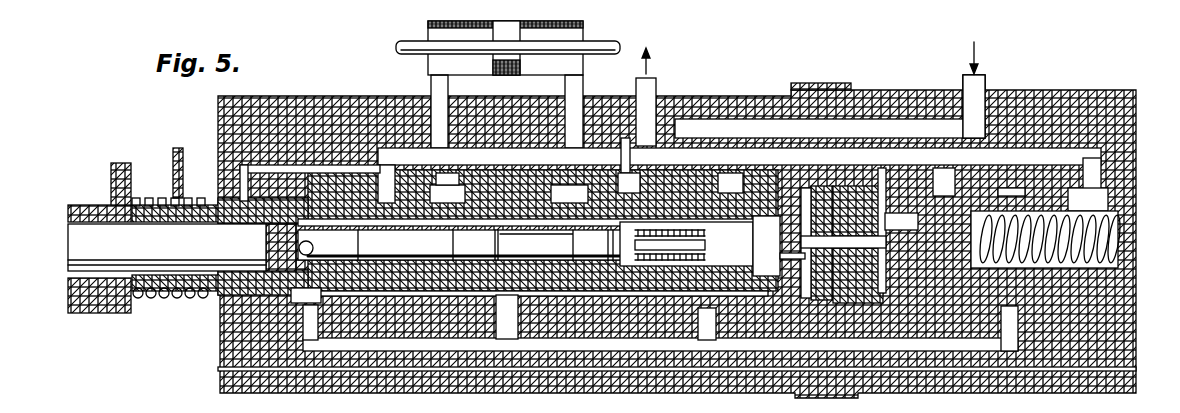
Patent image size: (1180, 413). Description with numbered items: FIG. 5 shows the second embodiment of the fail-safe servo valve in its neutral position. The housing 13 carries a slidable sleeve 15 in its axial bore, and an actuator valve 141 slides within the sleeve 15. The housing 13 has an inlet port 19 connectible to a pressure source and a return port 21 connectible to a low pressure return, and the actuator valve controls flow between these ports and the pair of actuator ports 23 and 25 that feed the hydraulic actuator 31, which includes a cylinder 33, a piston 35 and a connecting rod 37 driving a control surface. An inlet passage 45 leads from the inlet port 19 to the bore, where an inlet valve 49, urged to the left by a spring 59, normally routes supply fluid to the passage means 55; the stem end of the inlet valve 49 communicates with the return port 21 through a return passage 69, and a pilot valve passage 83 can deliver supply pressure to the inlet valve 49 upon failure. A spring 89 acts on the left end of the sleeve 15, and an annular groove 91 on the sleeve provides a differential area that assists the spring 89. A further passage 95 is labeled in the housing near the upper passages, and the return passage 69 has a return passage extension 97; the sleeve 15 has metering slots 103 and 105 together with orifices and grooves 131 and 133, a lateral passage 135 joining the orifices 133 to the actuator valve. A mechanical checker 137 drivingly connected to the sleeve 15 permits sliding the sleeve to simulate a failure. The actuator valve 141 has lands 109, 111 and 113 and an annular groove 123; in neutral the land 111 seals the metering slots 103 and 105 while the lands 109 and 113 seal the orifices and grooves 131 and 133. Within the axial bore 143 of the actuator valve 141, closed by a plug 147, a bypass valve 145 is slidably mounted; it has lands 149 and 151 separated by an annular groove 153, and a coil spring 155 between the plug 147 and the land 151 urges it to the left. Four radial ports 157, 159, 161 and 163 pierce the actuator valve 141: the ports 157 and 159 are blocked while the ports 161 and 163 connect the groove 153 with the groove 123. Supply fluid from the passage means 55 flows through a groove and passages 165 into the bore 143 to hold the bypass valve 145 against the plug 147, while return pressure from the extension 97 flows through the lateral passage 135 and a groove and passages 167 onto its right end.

The housing 13 is at (1068, 80).
The sleeve 15 is at (205, 292).
The inlet port 19 is at (970, 77).
The return port 21 is at (645, 92).
The actuator port 23 is at (428, 100).
The actuator port 25 is at (568, 98).
The hydraulic actuator 31 is at (416, 20).
The cylinder 33 is at (575, 16).
The piston 35 is at (512, 56).
The connecting rod 37 is at (638, 58).
The inlet passage 45 is at (867, 118).
The inlet valve 49 is at (946, 247).
The passage means 55 is at (908, 330).
The spring 59 is at (1085, 225).
The return passage 69 is at (1085, 146).
The pilot valve passage 83 is at (732, 330).
The spring 89 is at (143, 292).
The annular groove 91 is at (280, 290).
The passage 95 is at (742, 170).
The return passage extension 97 is at (618, 160).
The metering slot 103 is at (490, 288).
The metering slot 105 is at (518, 296).
The land 109 is at (378, 215).
The land 111 is at (505, 200).
The land 113 is at (655, 292).
The annular groove 123 is at (583, 265).
The orifices and grooves 131 is at (378, 160).
The orifices and grooves 133 is at (593, 184).
The lateral passage 135 is at (632, 195).
The mechanical checker 137 is at (172, 138).
The actuator valve 141 is at (125, 245).
The axial bore 143 is at (270, 235).
The bypass valve 145 is at (355, 245).
The plug 147 is at (712, 246).
The land 149 is at (468, 243).
The land 151 is at (603, 243).
The annular groove 153 is at (492, 236).
The coil spring 155 is at (660, 258).
The radial port 157 is at (460, 192).
The radial port 159 is at (440, 265).
The radial port 161 is at (542, 222).
The radial port 163 is at (540, 262).
The groove and passages 165 is at (280, 200).
The groove and passages 167 is at (722, 170).